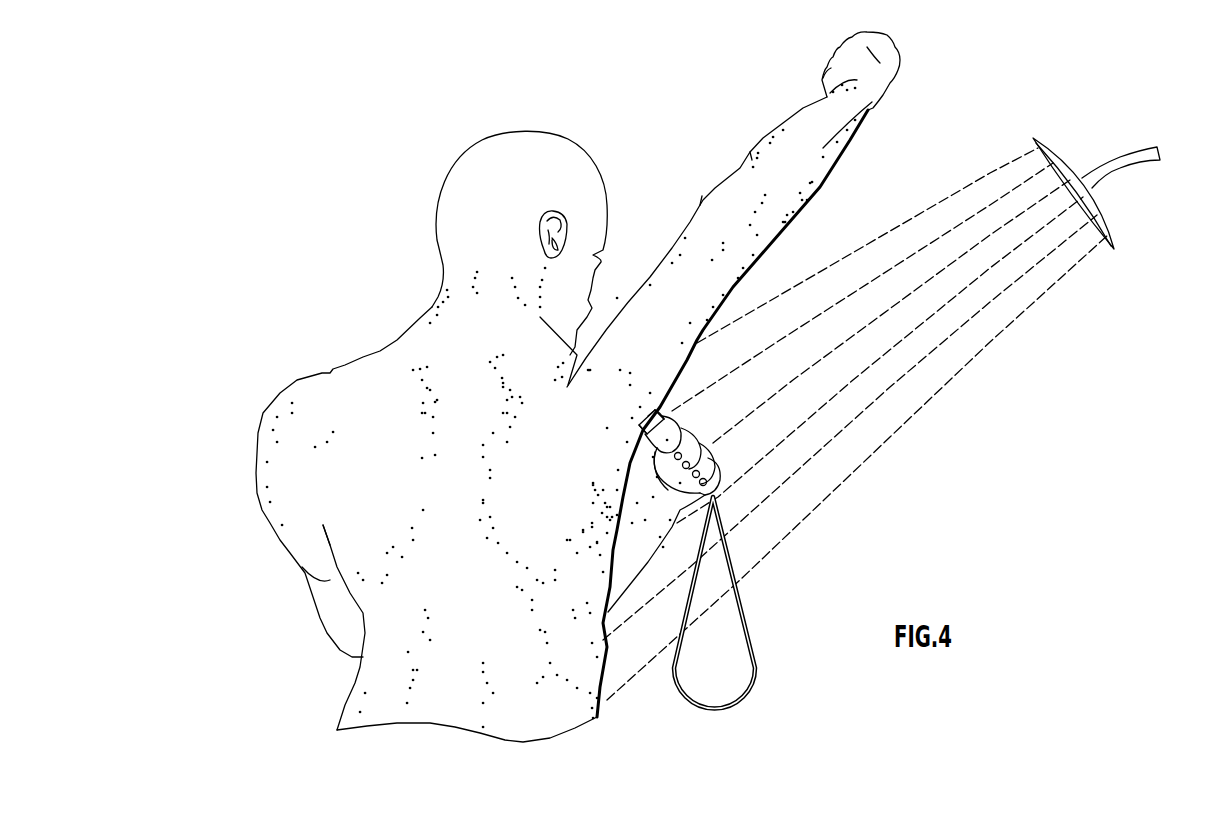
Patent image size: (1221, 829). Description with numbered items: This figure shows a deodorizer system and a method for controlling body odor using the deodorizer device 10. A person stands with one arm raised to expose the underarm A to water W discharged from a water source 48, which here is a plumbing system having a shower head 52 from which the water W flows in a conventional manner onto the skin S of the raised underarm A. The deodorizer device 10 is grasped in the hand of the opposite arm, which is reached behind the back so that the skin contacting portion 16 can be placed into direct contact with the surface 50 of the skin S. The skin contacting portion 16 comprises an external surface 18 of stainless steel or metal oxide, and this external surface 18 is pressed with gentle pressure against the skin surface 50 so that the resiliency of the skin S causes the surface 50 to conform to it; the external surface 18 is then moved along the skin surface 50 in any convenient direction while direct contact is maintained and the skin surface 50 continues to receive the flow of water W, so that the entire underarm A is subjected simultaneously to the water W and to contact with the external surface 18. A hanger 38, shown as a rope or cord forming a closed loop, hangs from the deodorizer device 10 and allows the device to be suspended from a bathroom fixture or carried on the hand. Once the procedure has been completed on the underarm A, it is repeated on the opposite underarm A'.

The deodorizer device 10 is at (665, 408).
The skin contacting portion 16 is at (643, 430).
The external surface 18 is at (668, 424).
The surface of the skin 50 is at (648, 416).
The hanger 38 is at (756, 631).
The water source 48 is at (1116, 208).
The shower head 52 is at (1060, 154).
The water W is at (988, 350).
The skin S is at (650, 414).
The underarm A is at (604, 463).
The opposite underarm A' is at (291, 550).